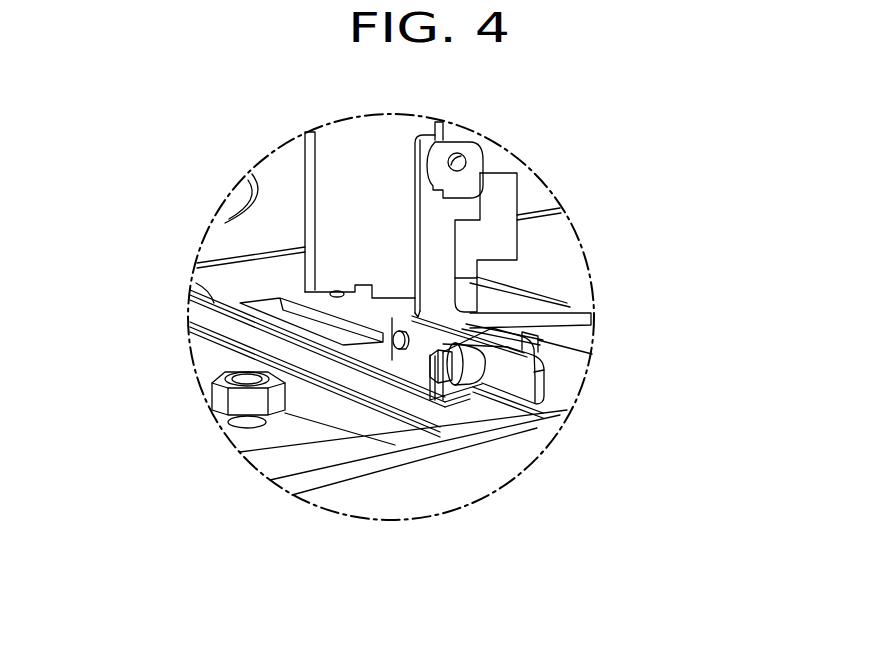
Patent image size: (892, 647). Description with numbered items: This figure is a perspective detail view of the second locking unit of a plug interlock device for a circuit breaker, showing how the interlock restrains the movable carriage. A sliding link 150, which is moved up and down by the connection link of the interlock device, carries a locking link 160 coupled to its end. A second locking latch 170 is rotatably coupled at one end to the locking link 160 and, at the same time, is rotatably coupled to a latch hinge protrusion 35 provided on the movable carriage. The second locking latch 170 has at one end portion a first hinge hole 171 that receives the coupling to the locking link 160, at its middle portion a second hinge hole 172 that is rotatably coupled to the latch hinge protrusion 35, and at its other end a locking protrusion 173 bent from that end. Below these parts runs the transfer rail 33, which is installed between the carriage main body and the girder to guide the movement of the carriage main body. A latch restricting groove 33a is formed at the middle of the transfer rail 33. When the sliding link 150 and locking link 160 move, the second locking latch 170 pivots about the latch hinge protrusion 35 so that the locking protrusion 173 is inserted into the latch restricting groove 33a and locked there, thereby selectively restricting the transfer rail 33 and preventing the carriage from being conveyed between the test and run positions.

The transfer rail 33 is at (212, 291).
The latch restricting groove 33a is at (470, 403).
The latch hinge protrusion 35 is at (530, 337).
The sliding link 150 is at (460, 140).
The locking link 160 is at (440, 240).
The second locking latch 170 is at (527, 378).
The first hinge hole 171 is at (392, 318).
The second hinge hole 172 is at (475, 380).
The locking protrusion 173 is at (440, 382).